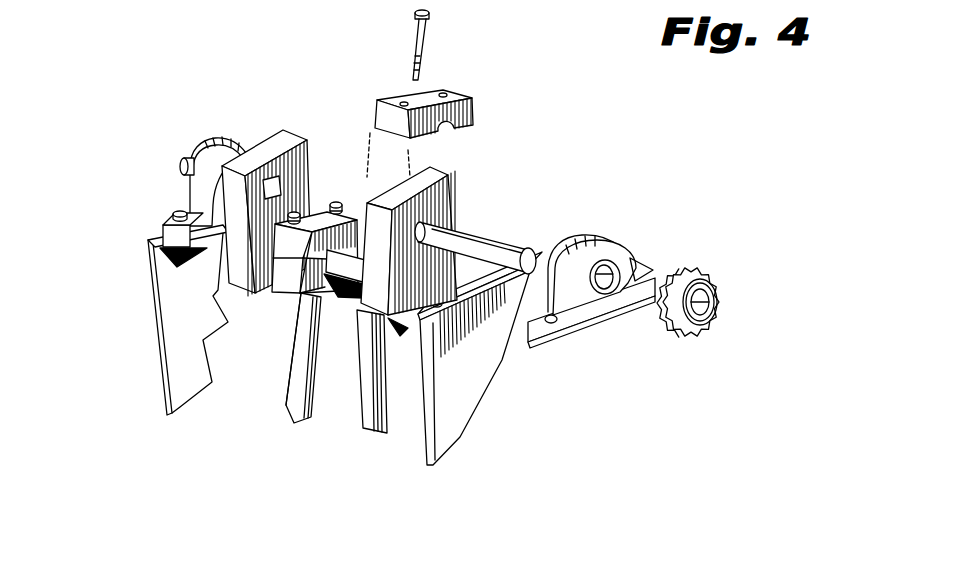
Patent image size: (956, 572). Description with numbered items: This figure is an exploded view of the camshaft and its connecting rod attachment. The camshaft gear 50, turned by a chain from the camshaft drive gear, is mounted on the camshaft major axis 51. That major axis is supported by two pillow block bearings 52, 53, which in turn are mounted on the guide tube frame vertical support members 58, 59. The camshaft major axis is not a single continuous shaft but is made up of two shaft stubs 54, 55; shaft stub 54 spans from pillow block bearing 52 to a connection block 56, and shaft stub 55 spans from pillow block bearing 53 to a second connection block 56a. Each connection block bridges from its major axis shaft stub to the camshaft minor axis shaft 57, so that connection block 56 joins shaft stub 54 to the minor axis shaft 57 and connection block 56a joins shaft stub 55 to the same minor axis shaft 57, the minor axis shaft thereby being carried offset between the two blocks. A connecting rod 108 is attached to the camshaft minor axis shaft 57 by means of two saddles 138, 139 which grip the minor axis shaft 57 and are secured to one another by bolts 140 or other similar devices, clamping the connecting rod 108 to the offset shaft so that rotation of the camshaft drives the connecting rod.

The camshaft gear 50 is at (706, 270).
The camshaft major axis 51 is at (565, 215).
The pillow block bearing 52 is at (607, 235).
The pillow block bearing 53 is at (207, 138).
The shaft stub 54 is at (468, 222).
The shaft stub 55 is at (181, 164).
The connection block 56 is at (450, 178).
The connection block 56a is at (267, 137).
The camshaft minor axis shaft 57 is at (342, 358).
The guide tube frame vertical support member 58 is at (443, 391).
The guide tube frame vertical support member 59 is at (160, 372).
The connecting rod 108 is at (288, 405).
The saddle 138 is at (463, 91).
The saddle 139 is at (287, 283).
The bolt 140 is at (423, 48).